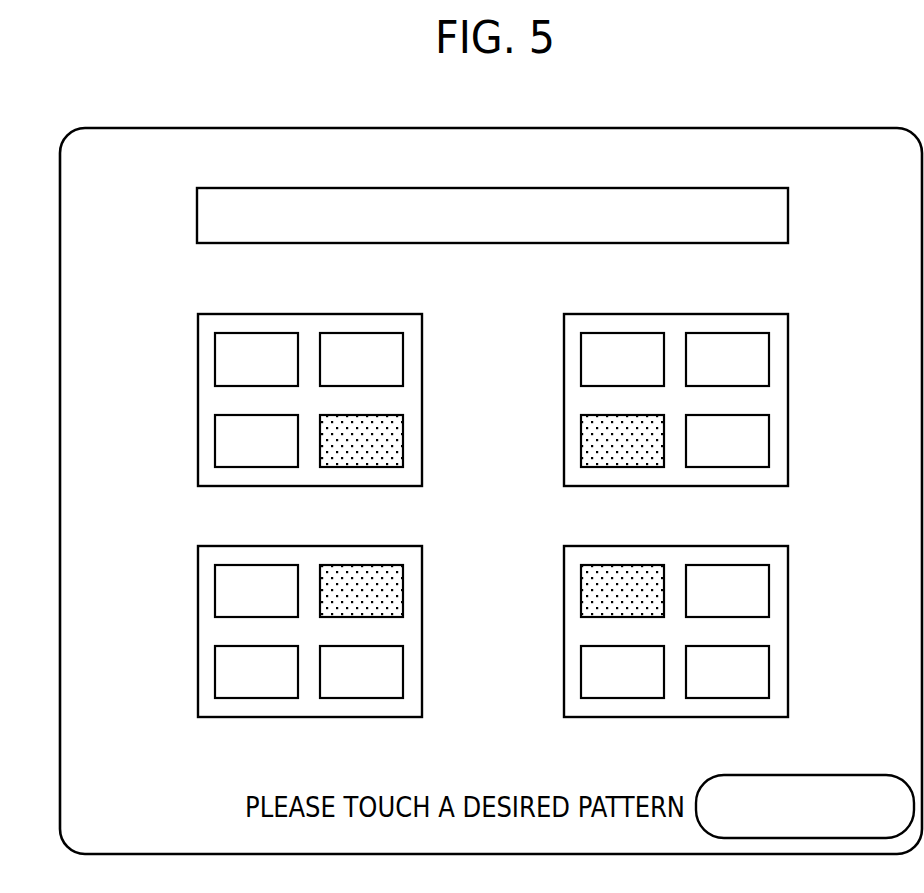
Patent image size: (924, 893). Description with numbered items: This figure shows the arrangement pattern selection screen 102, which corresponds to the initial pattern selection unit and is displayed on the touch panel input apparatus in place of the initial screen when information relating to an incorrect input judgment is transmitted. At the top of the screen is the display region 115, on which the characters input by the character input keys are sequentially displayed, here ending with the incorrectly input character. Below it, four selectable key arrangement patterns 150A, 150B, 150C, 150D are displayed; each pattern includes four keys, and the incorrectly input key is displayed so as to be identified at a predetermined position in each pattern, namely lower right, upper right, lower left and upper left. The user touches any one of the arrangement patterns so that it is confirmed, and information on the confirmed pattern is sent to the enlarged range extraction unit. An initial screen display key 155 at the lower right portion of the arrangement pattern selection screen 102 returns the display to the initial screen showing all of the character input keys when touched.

The arrangement pattern selection screen 102 is at (783, 128).
The display region 115 is at (688, 188).
The selectable key arrangement pattern 150A is at (380, 314).
The selectable key arrangement pattern 150B is at (380, 546).
The selectable key arrangement pattern 150C is at (745, 314).
The selectable key arrangement pattern 150D is at (745, 546).
The initial screen display key 155 is at (834, 775).